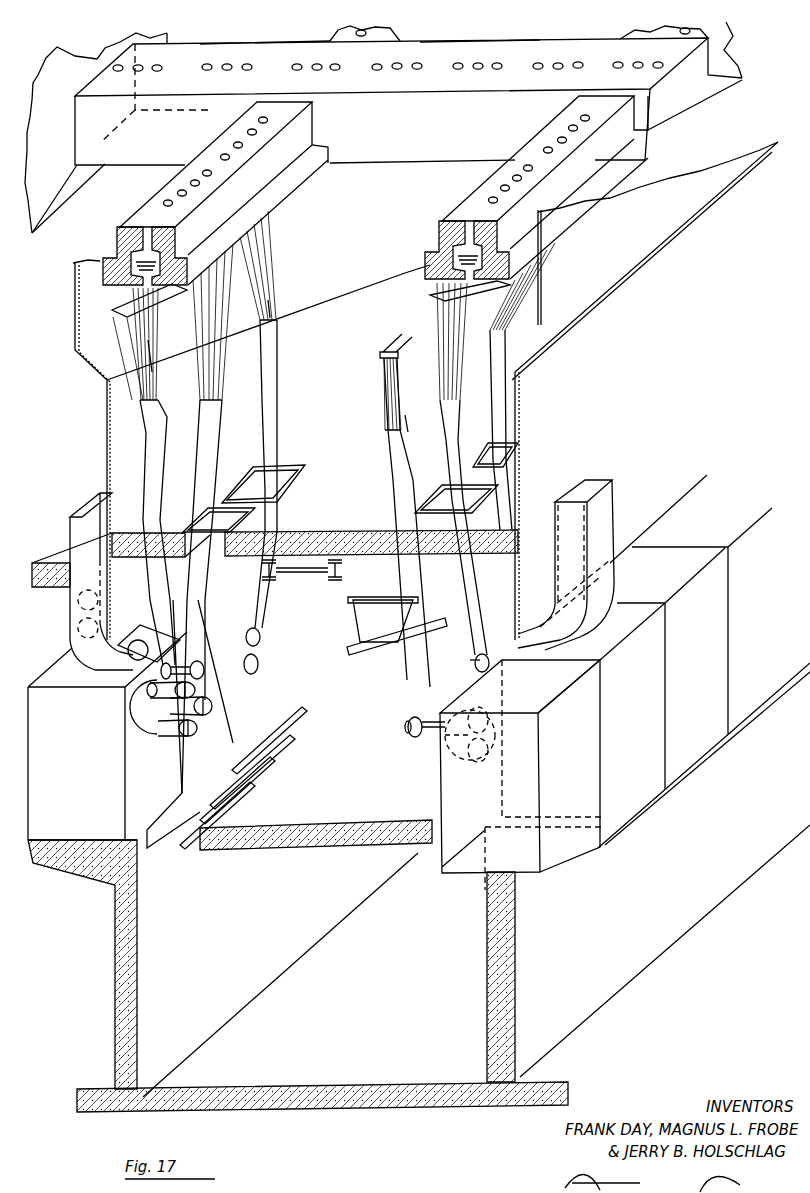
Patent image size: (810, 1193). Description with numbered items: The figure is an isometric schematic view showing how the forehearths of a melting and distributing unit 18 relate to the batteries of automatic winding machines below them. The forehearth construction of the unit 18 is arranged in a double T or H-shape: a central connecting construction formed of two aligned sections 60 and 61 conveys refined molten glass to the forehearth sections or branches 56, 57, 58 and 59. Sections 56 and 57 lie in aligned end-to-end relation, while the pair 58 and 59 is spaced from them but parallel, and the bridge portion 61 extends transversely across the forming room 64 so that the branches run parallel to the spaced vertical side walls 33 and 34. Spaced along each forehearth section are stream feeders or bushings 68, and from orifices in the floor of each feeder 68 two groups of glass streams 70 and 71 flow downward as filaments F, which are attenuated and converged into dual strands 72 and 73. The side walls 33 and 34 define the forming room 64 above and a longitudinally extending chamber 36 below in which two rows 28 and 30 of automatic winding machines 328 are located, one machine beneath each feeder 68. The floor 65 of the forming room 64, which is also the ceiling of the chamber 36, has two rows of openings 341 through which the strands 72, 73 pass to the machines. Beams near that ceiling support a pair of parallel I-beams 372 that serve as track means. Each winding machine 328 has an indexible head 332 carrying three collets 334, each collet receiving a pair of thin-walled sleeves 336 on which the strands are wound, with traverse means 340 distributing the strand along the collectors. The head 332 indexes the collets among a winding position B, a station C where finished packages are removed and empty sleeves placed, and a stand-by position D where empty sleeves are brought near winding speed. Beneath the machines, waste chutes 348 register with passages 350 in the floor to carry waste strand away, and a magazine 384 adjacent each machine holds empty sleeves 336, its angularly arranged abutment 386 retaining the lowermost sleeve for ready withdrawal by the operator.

The furnace unit 18 is at (56, 63).
The central connecting forehearth section 60 is at (232, 46).
The forehearth section 57 is at (330, 36).
The central connecting forehearth section 61 is at (538, 42).
The forehearth section 59 is at (650, 33).
The forehearth section 56 is at (170, 181).
The forehearth section 58 is at (487, 176).
The stream feeder 68 is at (122, 300).
The filaments F is at (149, 312).
The group of glass streams 70 is at (140, 395).
The group of glass streams 71 is at (158, 355).
The strand 72 is at (149, 459).
The strand 73 is at (163, 456).
The forming room 64 is at (338, 388).
The side wall 33 is at (107, 433).
The side wall 34 is at (515, 397).
The opening 341 is at (283, 472).
The magazine 384 is at (92, 500).
The floor 65 is at (299, 531).
The I-beam 372 is at (270, 582).
The winding machine chamber 36 is at (354, 698).
The waste chute 348 is at (292, 716).
The passage 350 is at (268, 763).
The traverse means 340 is at (197, 661).
The collet 334 is at (193, 698).
The indexible head 332 is at (140, 736).
The abutment 386 is at (165, 632).
The sleeve 336 is at (143, 617).
The row of winding machines 28 is at (62, 658).
The row of winding machines 30 is at (470, 681).
The automatic winding machine 328 is at (86, 781).
The stand-by position D is at (192, 690).
The winding position B is at (209, 706).
The removal position C is at (197, 728).